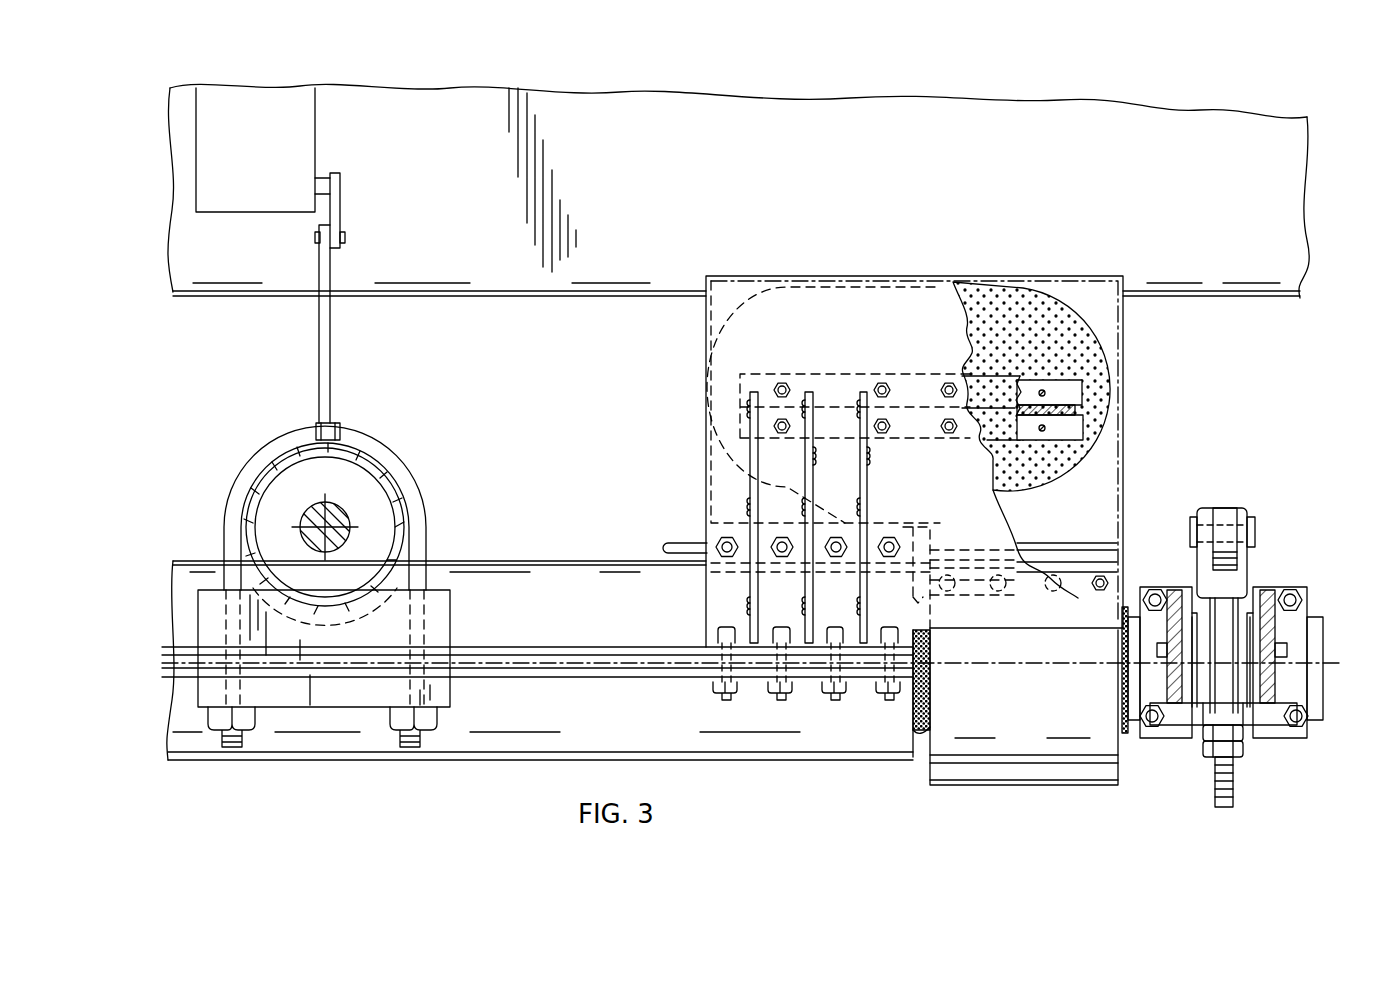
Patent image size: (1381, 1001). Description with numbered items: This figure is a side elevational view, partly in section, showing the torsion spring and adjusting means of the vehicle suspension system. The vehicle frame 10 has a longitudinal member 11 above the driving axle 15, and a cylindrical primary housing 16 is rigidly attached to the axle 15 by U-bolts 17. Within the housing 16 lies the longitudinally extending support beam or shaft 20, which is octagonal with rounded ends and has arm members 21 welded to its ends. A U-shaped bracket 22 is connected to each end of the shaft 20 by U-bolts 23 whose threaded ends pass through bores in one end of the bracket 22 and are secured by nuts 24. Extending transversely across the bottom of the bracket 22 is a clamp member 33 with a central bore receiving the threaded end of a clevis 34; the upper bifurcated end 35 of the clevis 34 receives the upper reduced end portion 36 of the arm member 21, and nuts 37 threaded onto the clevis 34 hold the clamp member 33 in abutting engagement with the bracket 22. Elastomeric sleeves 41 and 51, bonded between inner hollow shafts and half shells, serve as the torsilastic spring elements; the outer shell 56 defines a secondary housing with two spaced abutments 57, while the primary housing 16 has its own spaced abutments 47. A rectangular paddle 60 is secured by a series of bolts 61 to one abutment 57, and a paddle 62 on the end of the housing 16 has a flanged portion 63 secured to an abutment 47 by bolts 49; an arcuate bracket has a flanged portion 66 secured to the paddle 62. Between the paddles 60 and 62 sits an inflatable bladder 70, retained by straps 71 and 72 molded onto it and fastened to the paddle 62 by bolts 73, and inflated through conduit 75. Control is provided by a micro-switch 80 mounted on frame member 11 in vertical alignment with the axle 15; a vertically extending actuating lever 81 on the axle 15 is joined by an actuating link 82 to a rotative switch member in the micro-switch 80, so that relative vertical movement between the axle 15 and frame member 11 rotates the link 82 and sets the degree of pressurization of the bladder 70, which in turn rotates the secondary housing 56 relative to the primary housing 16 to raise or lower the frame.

The vehicle frame 10 is at (1284, 113).
The longitudinal member 11 is at (623, 297).
The driving axle 15 is at (385, 483).
The cylindrical primary housing 16 is at (502, 577).
The U-bolts 17 is at (380, 447).
The support beam or shaft 20 is at (1320, 637).
The arm member 21 is at (1240, 667).
The U-shaped bracket 22 is at (1298, 688).
The U-bolts 23 is at (1288, 597).
The nuts 24 is at (1153, 590).
The clamp member 33 is at (1250, 713).
The clevis 34 is at (1222, 795).
The upper bifurcated end 35 is at (1243, 563).
The upper reduced end portion 36 is at (1226, 508).
The nuts 37 is at (1203, 747).
The elastomeric sleeve 41 is at (911, 720).
The abutments 47 is at (643, 668).
The bolts 49 is at (720, 633).
The elastomeric sleeve 51 is at (925, 733).
The outer shell 56 is at (988, 750).
The abutments 57 is at (1095, 556).
The paddle 60 is at (1100, 290).
The bolts 61 is at (985, 592).
The paddle 62 is at (883, 295).
The flanged portion 63 is at (817, 647).
The flanged portion 66 is at (912, 527).
The inflatable bladder 70 is at (1025, 297).
The strap 71 is at (1075, 395).
The strap 72 is at (1107, 426).
The bolts 73 is at (787, 420).
The conduit 75 is at (680, 543).
The micro-switch 80 is at (304, 133).
The actuating lever 81 is at (327, 352).
The actuating link 82 is at (334, 217).